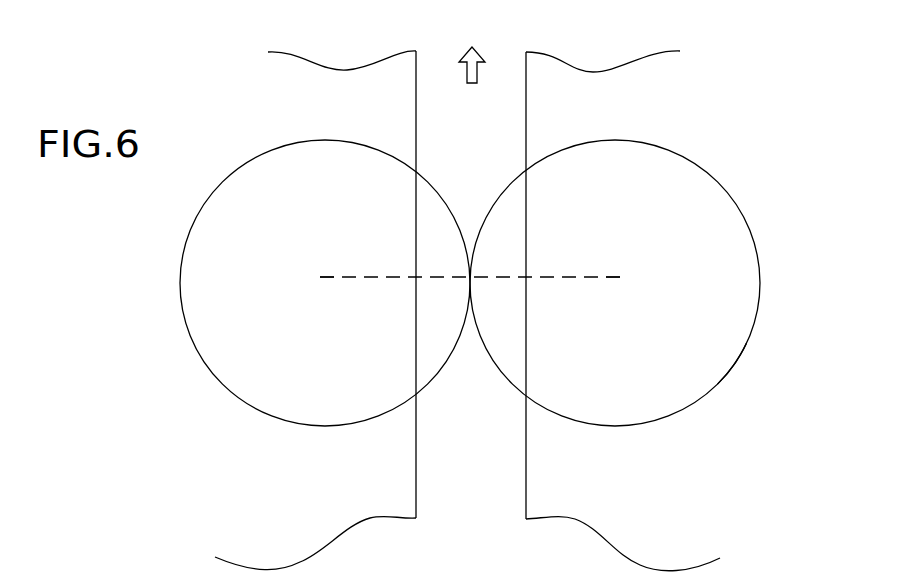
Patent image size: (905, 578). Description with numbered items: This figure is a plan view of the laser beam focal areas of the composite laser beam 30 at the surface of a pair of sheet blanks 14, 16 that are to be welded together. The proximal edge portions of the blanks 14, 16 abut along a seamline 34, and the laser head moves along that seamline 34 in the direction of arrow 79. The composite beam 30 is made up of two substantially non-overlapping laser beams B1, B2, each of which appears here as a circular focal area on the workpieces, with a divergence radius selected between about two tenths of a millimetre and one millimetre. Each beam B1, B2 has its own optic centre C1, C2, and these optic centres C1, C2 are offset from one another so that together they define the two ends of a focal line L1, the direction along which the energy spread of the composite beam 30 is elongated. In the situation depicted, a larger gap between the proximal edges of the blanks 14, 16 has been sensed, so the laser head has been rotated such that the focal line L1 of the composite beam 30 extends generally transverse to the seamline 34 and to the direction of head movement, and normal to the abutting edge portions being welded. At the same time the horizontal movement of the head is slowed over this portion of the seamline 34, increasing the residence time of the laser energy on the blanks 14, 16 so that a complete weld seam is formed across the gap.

The sheet blank 16 is at (300, 494).
The sheet blank 14 is at (672, 494).
The seamline 34 is at (513, 112).
The composite laser beam 30 is at (718, 218).
The arrow 79 is at (472, 293).
The laser beam B1 is at (218, 333).
The laser beam B2 is at (716, 360).
The optic centre C1 is at (317, 259).
The optic centre C2 is at (612, 261).
The focal line L1 is at (565, 278).